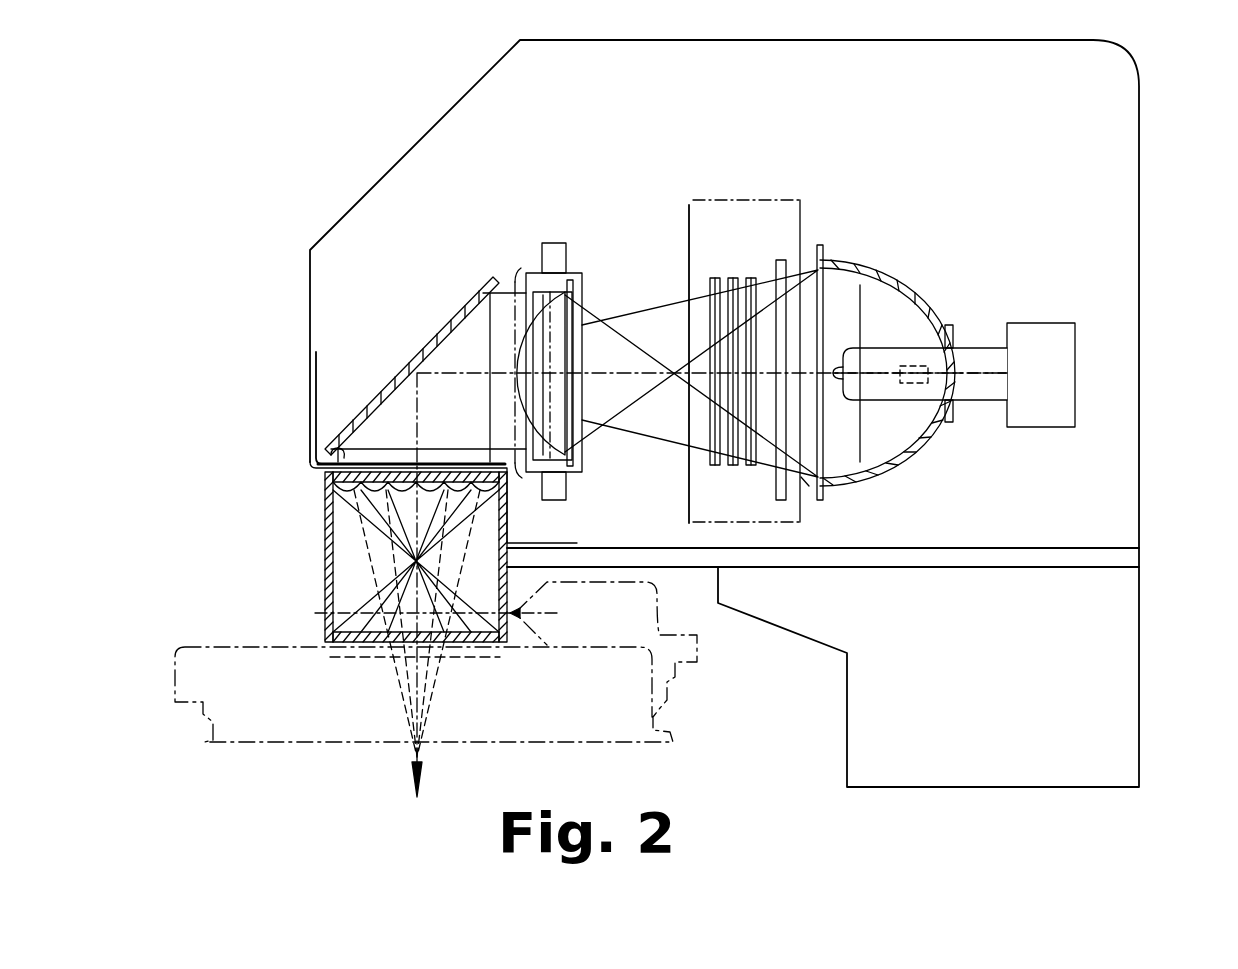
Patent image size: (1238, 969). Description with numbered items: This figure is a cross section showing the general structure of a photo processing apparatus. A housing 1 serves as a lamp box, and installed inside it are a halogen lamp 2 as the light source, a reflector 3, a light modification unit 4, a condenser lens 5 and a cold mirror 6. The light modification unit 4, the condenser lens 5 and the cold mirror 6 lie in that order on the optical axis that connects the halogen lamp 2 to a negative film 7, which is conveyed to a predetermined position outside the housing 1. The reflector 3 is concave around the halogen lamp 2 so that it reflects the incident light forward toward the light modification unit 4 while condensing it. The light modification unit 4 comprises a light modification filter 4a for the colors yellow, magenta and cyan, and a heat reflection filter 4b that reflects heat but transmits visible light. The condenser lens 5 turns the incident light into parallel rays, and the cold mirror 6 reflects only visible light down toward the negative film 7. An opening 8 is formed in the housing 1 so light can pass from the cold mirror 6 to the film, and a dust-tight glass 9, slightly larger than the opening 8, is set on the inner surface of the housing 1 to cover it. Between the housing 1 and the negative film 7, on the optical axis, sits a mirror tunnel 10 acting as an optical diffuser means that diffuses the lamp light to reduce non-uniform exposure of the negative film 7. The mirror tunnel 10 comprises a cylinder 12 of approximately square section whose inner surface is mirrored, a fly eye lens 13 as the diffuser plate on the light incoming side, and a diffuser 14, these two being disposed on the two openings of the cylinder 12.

The housing 1 is at (1139, 245).
The halogen lamp 2 is at (978, 348).
The reflector 3 is at (885, 272).
The light modification unit 4 is at (736, 200).
The light modification filter 4a is at (762, 272).
The heat reflection filter 4b is at (780, 262).
The condenser lens 5 is at (560, 315).
The cold mirror 6 is at (418, 353).
The negative film 7 is at (365, 655).
The opening 8 is at (336, 448).
The dust-tight glass 9 is at (456, 462).
The mirror tunnel 10 is at (332, 627).
The cylinder 12 is at (325, 553).
The fly eye lens 13 is at (318, 477).
The diffuser 14 is at (376, 626).